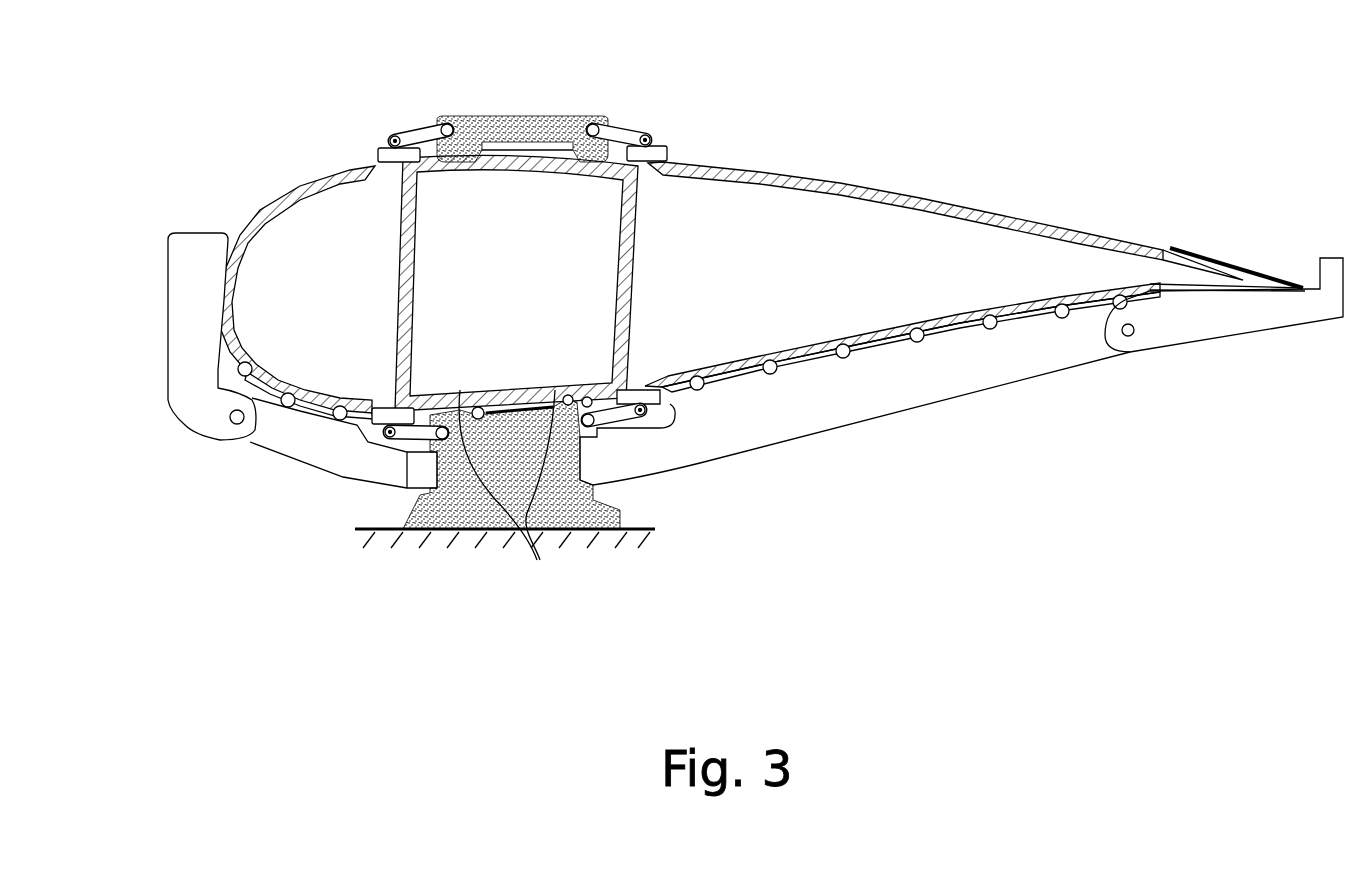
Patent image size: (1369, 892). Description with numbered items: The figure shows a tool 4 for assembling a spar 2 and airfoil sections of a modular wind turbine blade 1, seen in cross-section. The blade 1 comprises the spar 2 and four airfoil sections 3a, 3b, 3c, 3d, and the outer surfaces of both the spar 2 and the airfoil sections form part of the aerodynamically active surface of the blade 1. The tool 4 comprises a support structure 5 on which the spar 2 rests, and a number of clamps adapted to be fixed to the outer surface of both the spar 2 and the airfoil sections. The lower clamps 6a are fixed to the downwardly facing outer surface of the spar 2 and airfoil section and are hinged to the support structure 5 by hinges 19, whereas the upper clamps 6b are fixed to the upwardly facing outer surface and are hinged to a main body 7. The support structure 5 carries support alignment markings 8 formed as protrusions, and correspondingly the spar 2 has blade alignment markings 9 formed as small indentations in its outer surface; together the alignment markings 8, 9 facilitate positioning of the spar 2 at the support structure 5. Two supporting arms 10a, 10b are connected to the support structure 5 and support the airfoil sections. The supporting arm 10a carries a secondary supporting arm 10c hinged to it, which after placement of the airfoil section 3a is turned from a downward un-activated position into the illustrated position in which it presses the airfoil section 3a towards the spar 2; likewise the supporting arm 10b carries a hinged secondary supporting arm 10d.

The modular wind turbine blade 1 is at (910, 242).
The spar 2 is at (640, 277).
The airfoil section 3a is at (258, 213).
The airfoil section 3b is at (795, 175).
The airfoil section 3c is at (888, 345).
The airfoil section 3d is at (1253, 280).
The tool 4 is at (842, 575).
The support structure 5 is at (470, 529).
The lower clamps 6a is at (380, 422).
The upper clamps 6b is at (383, 140).
The main body 7 is at (523, 120).
The support alignment markings 8 is at (537, 560).
The blade alignment markings 9 is at (555, 390).
The supporting arm 10a is at (283, 443).
The supporting arm 10b is at (990, 360).
The secondary supporting arm 10c is at (203, 415).
The secondary supporting arm 10d is at (1210, 320).
The hinges 19 is at (437, 440).